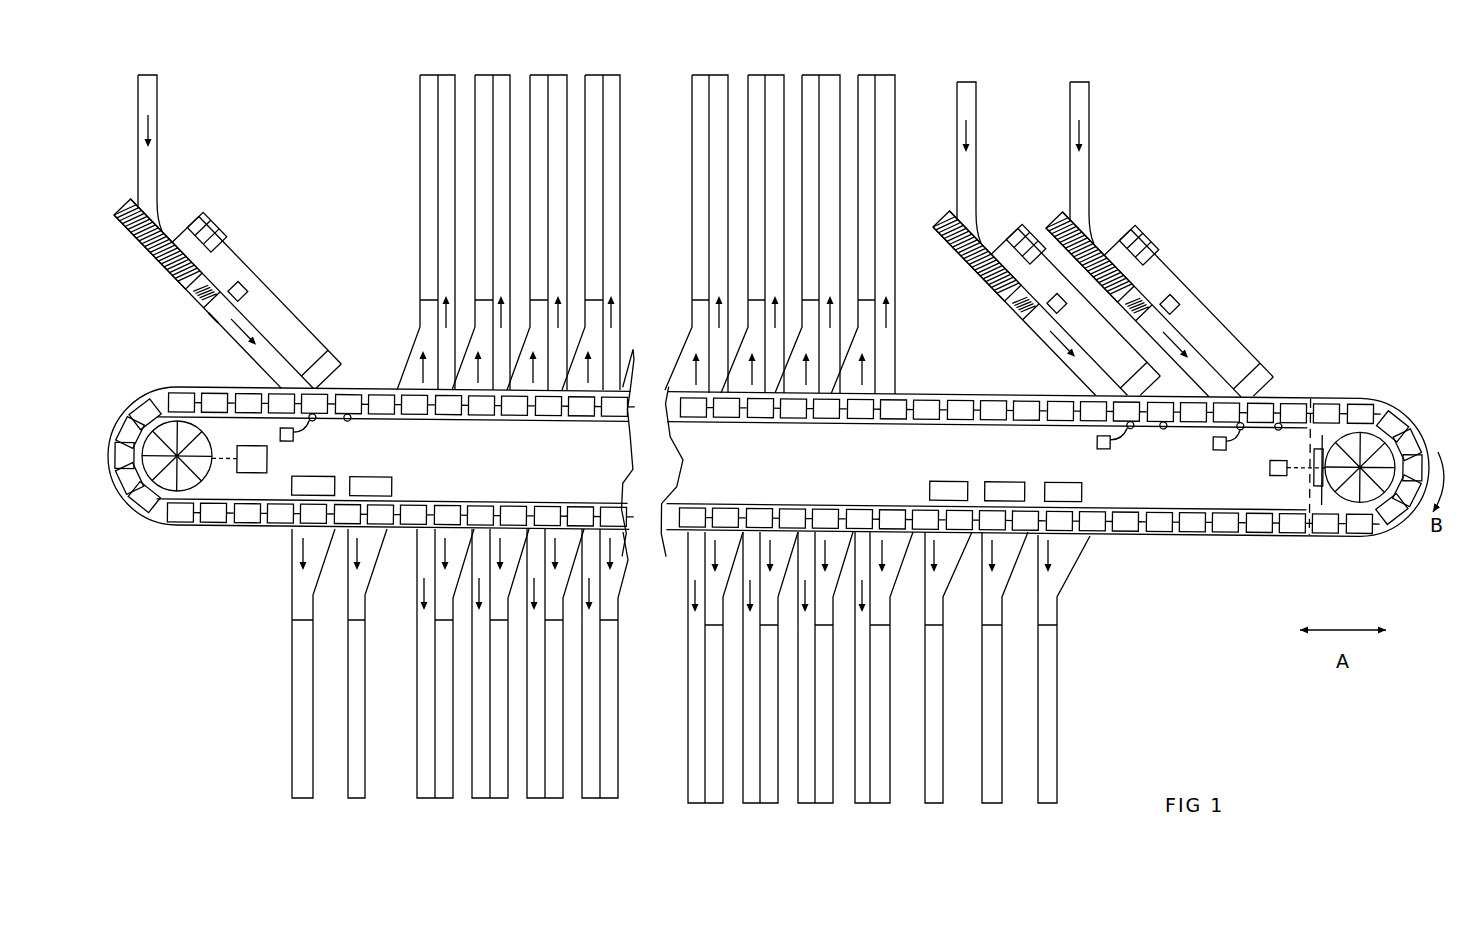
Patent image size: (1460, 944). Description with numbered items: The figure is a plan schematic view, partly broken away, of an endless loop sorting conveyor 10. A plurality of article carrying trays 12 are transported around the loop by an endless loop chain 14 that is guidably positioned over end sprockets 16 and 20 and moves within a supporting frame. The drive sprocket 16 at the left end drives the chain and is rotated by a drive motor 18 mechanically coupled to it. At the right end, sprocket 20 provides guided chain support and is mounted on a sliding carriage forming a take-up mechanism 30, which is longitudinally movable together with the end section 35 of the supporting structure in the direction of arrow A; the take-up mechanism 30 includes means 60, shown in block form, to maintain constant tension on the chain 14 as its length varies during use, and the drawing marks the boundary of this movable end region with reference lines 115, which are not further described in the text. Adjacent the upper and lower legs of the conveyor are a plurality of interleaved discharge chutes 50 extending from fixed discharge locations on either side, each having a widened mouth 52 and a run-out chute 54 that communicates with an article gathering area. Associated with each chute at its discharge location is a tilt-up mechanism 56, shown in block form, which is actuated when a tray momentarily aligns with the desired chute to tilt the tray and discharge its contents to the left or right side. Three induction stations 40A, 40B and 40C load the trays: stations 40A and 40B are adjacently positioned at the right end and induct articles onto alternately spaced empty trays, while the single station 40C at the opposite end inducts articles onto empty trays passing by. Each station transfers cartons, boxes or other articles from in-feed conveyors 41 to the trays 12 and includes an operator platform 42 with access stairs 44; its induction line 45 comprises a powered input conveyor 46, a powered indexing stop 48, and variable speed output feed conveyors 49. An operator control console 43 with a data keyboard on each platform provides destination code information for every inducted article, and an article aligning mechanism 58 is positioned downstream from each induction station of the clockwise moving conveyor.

The sorting conveyor 10 is at (769, 469).
The article carrying trays 12 is at (248, 523).
The endless loop chain 14 is at (1243, 524).
The drive sprocket 16 is at (190, 482).
The drive motor 18 is at (267, 458).
The end sprocket 20 is at (1372, 445).
The take-up mechanism 30 is at (1312, 449).
The end section 35 is at (1380, 550).
The induction station 40A is at (1090, 104).
The induction station 40B is at (977, 103).
The induction station 40C is at (238, 232).
The in-feed conveyor 41 is at (158, 104).
The operator platform 42 is at (234, 259).
The operator control console 43 is at (250, 291).
The access stairs 44 is at (205, 227).
The induction line 45 is at (209, 322).
The powered input conveyor 46 is at (165, 260).
The powered indexing stop 48 is at (199, 299).
The variable speed output feed conveyor 49 is at (247, 357).
The discharge chutes 50 is at (702, 686).
The widened mouth 52 is at (1079, 557).
The run-out chute 54 is at (1058, 705).
The tilt-up mechanism 56 is at (948, 473).
The article aligning mechanism 58 is at (348, 422).
The tension maintaining means 60 is at (1271, 466).
The gate line 115 is at (1310, 388).